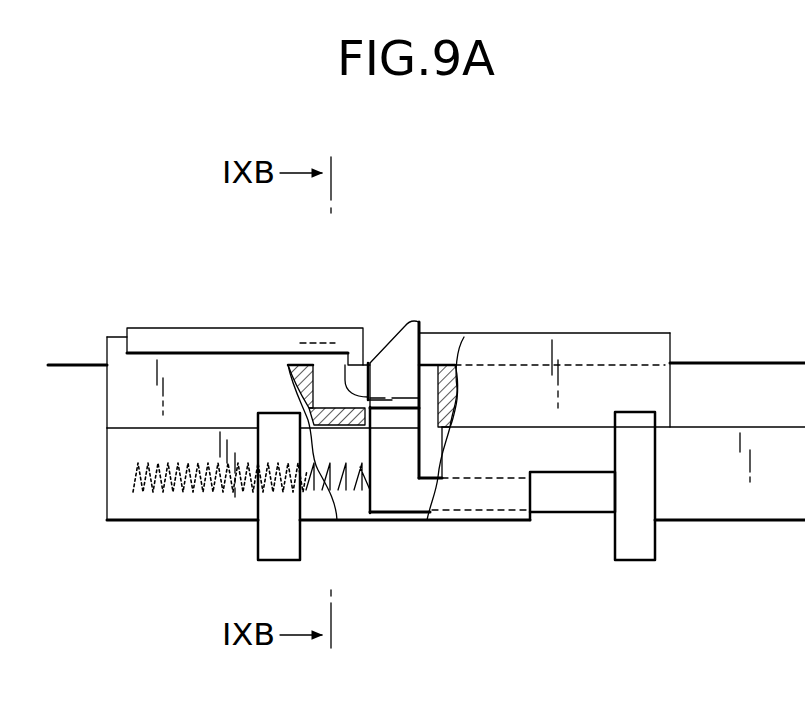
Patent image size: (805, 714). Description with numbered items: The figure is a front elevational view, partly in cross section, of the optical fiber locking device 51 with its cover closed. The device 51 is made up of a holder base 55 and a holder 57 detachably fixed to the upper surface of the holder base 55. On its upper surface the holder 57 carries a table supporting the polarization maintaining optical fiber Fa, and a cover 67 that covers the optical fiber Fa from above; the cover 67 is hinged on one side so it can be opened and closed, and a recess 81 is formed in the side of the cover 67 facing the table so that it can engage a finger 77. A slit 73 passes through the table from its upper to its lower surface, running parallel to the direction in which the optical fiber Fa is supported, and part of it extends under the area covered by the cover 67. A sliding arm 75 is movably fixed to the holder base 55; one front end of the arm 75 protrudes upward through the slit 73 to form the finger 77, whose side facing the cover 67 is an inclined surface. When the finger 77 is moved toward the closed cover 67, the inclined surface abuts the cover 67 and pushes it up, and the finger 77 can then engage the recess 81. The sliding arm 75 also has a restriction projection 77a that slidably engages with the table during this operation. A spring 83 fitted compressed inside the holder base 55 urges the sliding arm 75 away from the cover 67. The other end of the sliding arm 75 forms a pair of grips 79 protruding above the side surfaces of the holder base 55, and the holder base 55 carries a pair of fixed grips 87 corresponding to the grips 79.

The optical fiber locking device 51 is at (458, 240).
The polarization maintaining optical fiber Fa is at (74, 358).
The holder 57 is at (107, 401).
The holder base 55 is at (138, 522).
The cover 67 is at (160, 328).
The recess 81 is at (288, 365).
The restriction projection 77a is at (358, 364).
The finger 77 is at (408, 321).
The slit 73 is at (438, 365).
The spring 83 is at (353, 490).
The fixed grips 87 is at (258, 537).
The sliding arm 75 is at (552, 518).
The grips 79 is at (630, 560).